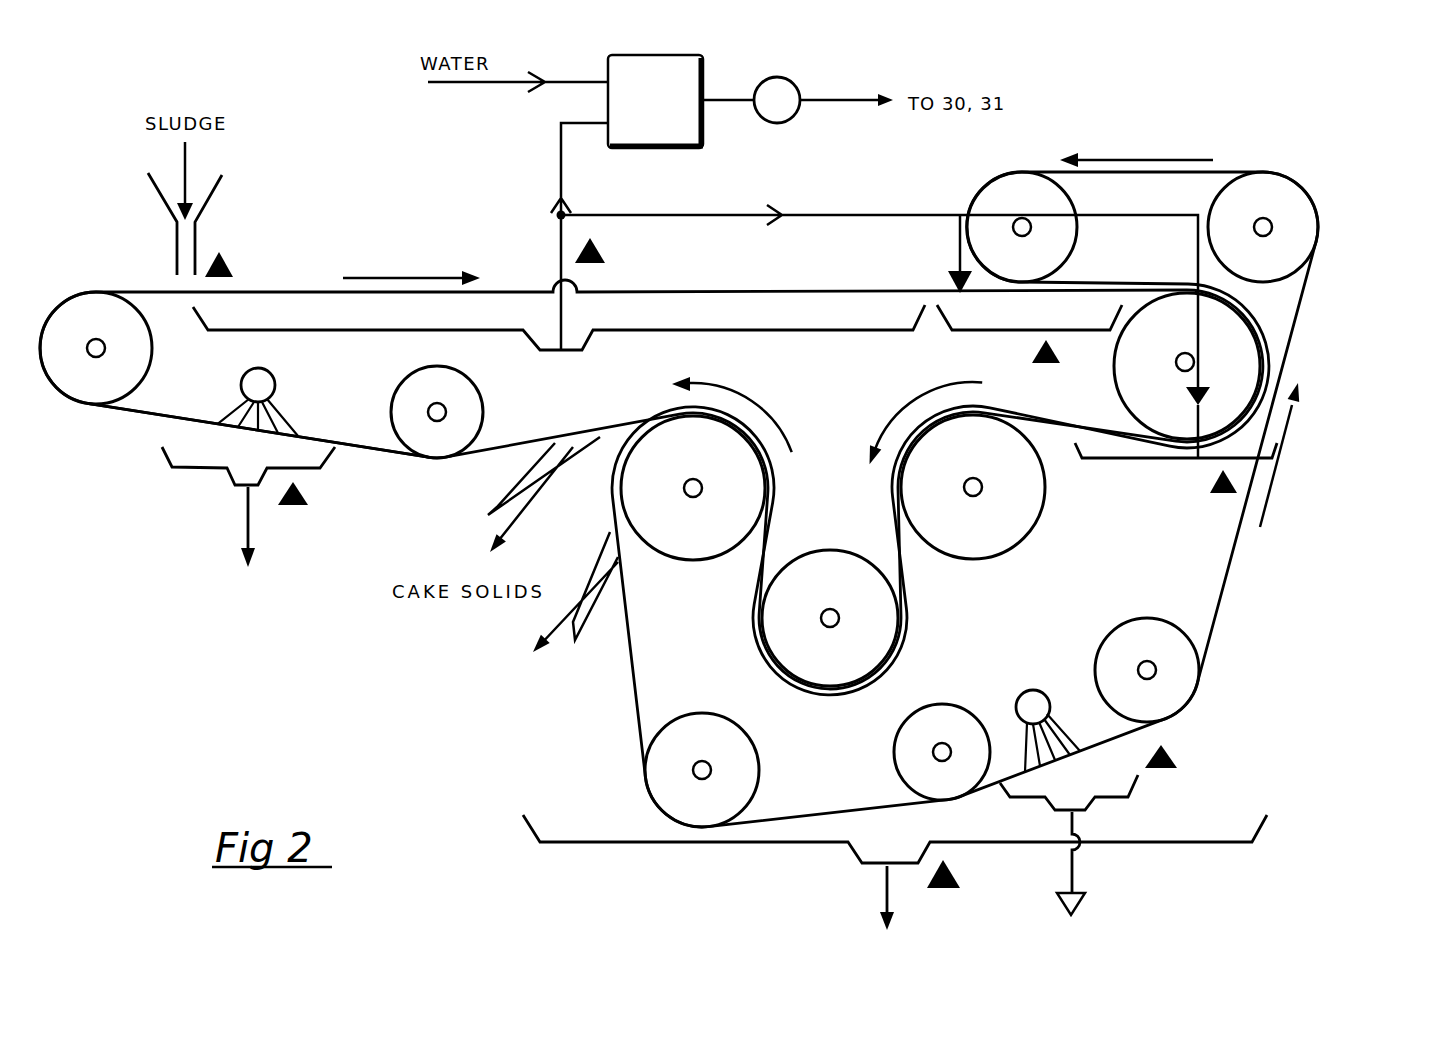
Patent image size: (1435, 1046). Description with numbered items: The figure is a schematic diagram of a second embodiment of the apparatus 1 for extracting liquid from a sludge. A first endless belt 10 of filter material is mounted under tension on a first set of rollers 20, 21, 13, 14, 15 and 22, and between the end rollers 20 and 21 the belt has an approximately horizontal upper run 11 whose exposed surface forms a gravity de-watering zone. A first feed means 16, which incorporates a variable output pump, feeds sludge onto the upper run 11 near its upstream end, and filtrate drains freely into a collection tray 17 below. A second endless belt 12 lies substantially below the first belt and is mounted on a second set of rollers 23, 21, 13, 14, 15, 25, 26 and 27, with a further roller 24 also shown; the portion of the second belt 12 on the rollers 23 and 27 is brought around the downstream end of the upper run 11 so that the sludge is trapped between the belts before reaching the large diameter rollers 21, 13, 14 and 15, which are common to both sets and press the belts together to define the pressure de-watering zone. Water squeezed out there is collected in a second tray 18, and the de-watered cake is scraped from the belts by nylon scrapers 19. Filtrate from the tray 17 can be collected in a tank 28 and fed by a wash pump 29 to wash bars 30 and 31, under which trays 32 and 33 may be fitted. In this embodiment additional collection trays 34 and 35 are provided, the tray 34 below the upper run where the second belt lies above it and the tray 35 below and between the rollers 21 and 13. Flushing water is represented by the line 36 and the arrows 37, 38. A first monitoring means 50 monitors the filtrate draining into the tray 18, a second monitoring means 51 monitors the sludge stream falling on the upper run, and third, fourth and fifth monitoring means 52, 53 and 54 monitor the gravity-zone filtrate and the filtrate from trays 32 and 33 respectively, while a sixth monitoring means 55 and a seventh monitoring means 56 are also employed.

The apparatus 1 is at (460, 700).
The first endless belt 10 is at (128, 412).
The upper run 11 is at (700, 292).
The second endless belt 12 is at (1219, 610).
The roller 13 is at (1025, 530).
The roller 14 is at (896, 614).
The roller 15 is at (696, 550).
The first feed means 16 is at (199, 230).
The collection tray 17 is at (368, 332).
The second tray 18 is at (640, 843).
The nylon scrapers 19 is at (510, 490).
The end roller 20 is at (85, 300).
The roller 21 is at (1185, 440).
The roller 22 is at (484, 410).
The roller 23 is at (985, 187).
The lower belt roller 24 is at (650, 786).
The roller 25 is at (897, 766).
The roller 26 is at (1186, 702).
The roller 27 is at (1310, 241).
The tank 28 is at (680, 140).
The wash pump 29 is at (778, 78).
The wash bar 30 is at (243, 372).
The wash bar 31 is at (1033, 690).
The tray 32 is at (190, 468).
The tray 33 is at (1130, 798).
The collection tray 34 is at (988, 332).
The collection tray 35 is at (1150, 460).
The line 36 is at (830, 214).
The arrow 37 is at (948, 270).
The arrow 38 is at (1186, 396).
The first monitoring means 50 is at (962, 884).
The second monitoring means 51 is at (233, 270).
The third monitoring means 52 is at (604, 252).
The fourth monitoring means 53 is at (310, 494).
The fifth monitoring means 54 is at (1176, 757).
The sixth monitoring means 55 is at (1046, 364).
The seventh monitoring means 56 is at (1223, 494).